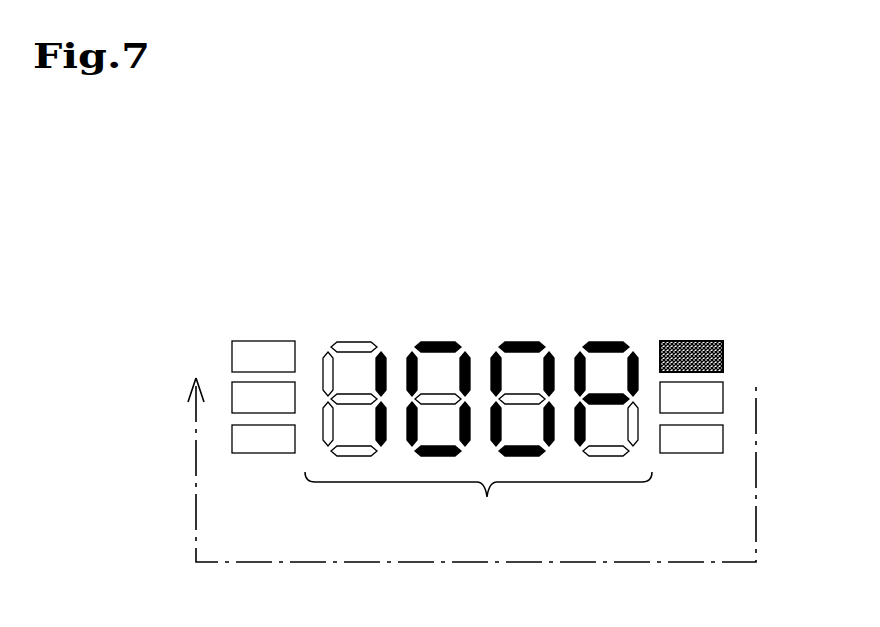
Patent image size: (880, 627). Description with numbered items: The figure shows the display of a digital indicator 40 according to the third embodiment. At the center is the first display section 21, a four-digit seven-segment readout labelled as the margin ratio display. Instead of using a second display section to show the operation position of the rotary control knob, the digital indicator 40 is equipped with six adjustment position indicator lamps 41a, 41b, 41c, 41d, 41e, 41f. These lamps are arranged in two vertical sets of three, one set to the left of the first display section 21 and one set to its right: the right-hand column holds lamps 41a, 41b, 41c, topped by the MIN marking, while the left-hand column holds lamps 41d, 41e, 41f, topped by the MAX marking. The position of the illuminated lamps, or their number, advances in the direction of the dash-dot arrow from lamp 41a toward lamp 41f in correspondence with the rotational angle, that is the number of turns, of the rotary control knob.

The digital indicator 40 is at (583, 225).
The first display section 21 is at (463, 305).
The adjustment position indicator lamp 41a is at (683, 341).
The adjustment position indicator lamp 41b is at (723, 402).
The adjustment position indicator lamp 41c is at (675, 453).
The adjustment position indicator lamp 41d is at (280, 453).
The adjustment position indicator lamp 41e is at (232, 402).
The adjustment position indicator lamp 41f is at (262, 341).